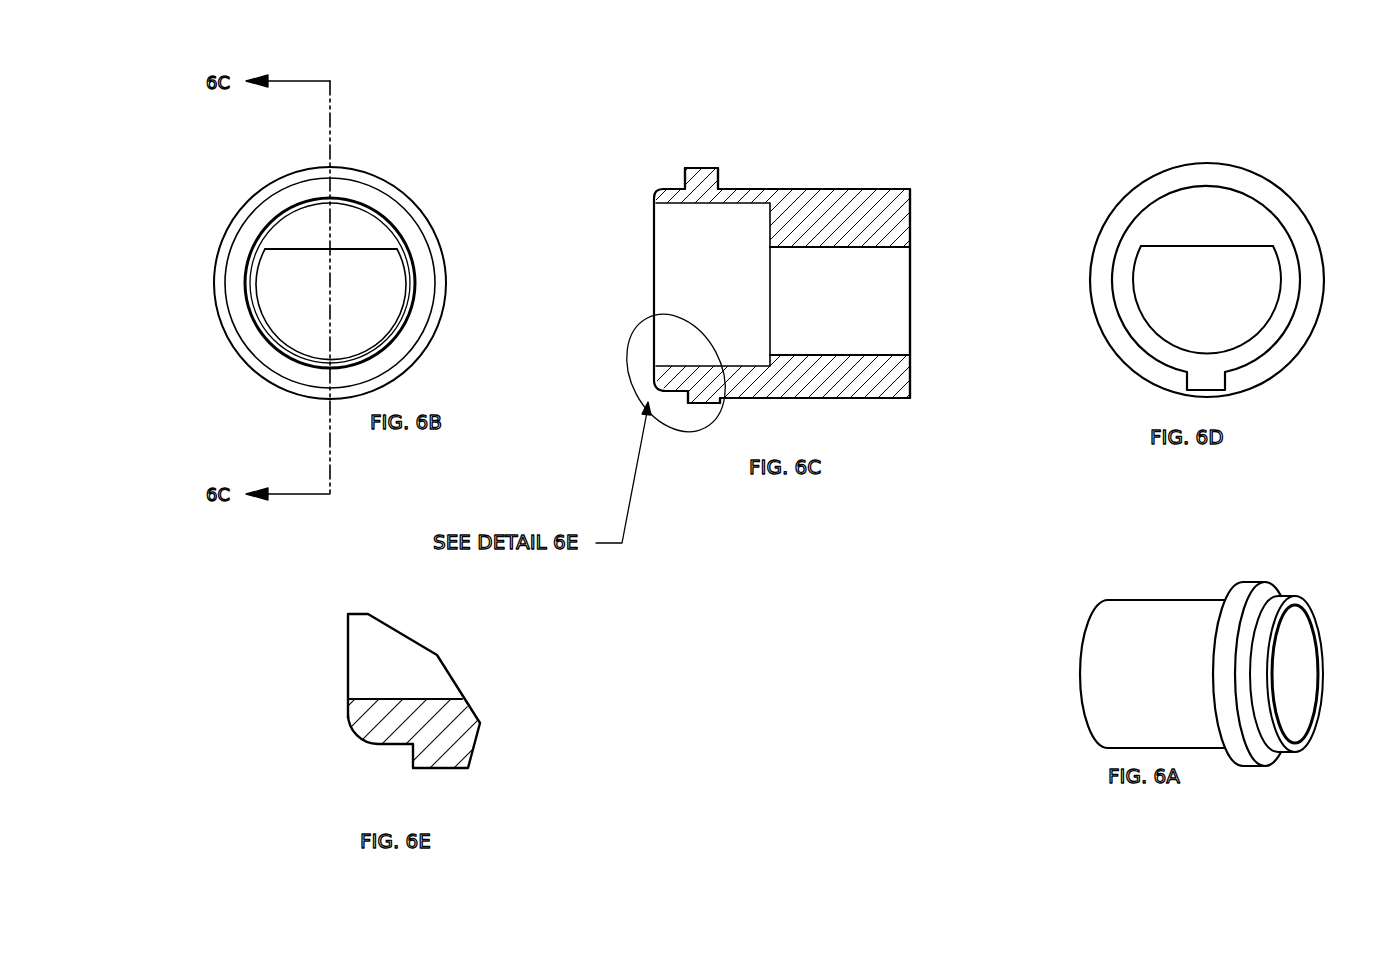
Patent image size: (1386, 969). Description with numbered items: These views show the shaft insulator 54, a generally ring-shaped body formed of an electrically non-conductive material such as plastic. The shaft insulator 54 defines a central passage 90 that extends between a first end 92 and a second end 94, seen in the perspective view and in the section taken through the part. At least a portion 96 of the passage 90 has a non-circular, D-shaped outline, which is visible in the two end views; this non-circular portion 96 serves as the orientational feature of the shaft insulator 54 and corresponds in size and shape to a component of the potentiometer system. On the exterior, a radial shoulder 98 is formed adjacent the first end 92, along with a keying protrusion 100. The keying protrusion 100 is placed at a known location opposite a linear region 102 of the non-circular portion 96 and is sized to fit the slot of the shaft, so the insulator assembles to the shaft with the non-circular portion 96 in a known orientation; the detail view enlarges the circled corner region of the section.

In FIG. 6B, the shaft insulator 54 is at (408, 174).
In FIG. 6C, the shaft insulator 54 is at (787, 170).
In FIG. 6D, the shaft insulator 54 is at (1101, 193).
In FIG. 6A, the shaft insulator 54 is at (1145, 581).
In FIG. 6B, the central passage 90 is at (380, 227).
In FIG. 6C, the central passage 90 is at (835, 254).
In FIG. 6A, the central passage 90 is at (1300, 668).
In FIG. 6E, the central passage 90 is at (376, 692).
In FIG. 6C, the first end 92 is at (654, 244).
In FIG. 6A, the first end 92 is at (1304, 612).
In FIG. 6C, the second end 94 is at (910, 327).
In FIG. 6A, the second end 94 is at (1080, 683).
In FIG. 6B, the non-circular portion 96 is at (272, 309).
In FIG. 6D, the non-circular portion 96 is at (1160, 312).
In FIG. 6C, the radial shoulder 98 is at (695, 403).
In FIG. 6A, the radial shoulder 98 is at (1246, 592).
In FIG. 6C, the keying protrusion 100 is at (705, 168).
In FIG. 6D, the keying protrusion 100 is at (1207, 381).
In FIG. 6B, the linear region 102 is at (343, 250).
In FIG. 6D, the linear region 102 is at (1200, 246).